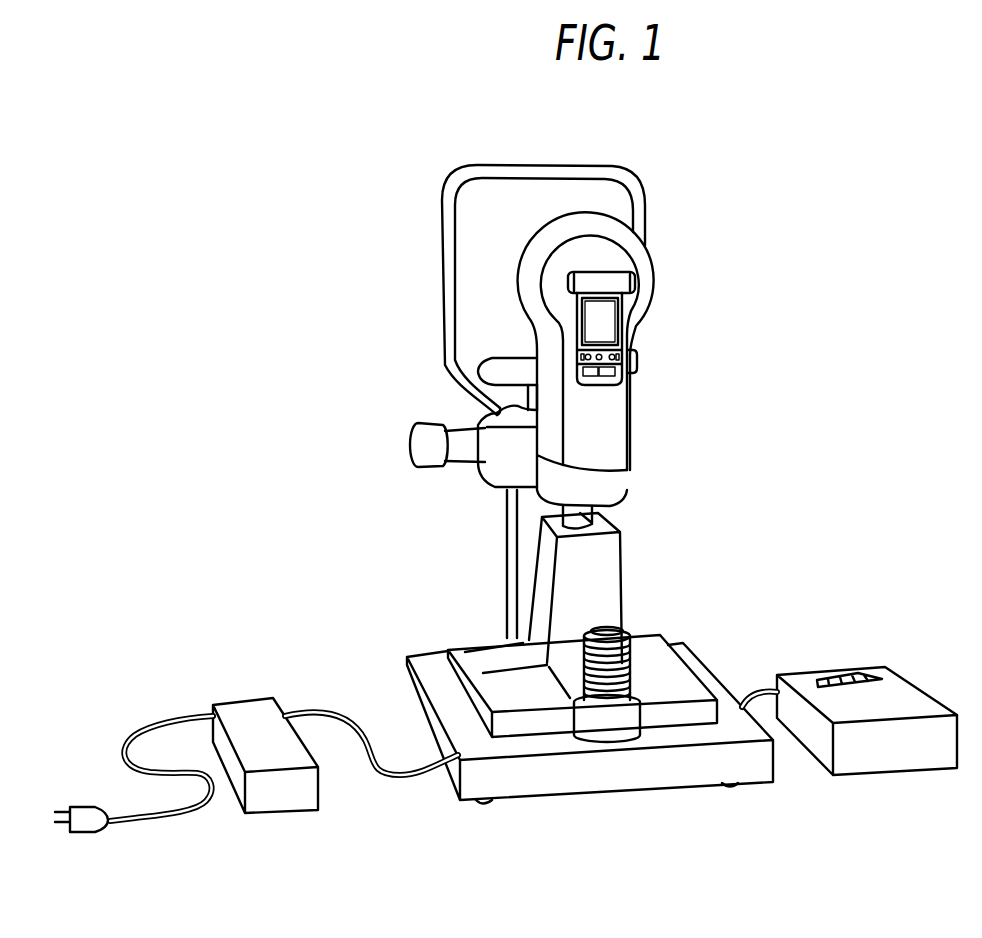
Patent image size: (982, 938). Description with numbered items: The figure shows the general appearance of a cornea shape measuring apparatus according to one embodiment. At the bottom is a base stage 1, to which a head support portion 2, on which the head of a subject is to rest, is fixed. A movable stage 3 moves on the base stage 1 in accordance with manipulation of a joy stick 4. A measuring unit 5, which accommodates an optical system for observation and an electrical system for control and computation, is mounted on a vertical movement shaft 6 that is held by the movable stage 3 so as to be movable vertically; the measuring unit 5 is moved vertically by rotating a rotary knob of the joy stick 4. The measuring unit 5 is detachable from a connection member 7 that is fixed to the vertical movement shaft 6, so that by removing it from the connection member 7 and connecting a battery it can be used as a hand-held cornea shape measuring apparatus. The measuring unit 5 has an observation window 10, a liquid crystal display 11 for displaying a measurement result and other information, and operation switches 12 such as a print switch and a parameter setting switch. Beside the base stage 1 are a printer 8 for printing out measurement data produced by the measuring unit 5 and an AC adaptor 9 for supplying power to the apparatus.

The base stage 1 is at (612, 779).
The head support portion 2 is at (456, 501).
The movable stage 3 is at (483, 660).
The joy stick 4 is at (636, 667).
The measuring unit 5 is at (664, 224).
The vertical movement shaft 6 is at (601, 516).
The connection member 7 is at (613, 484).
The printer 8 is at (873, 669).
The AC adaptor 9 is at (243, 698).
The observation window 10 is at (638, 284).
The liquid crystal display 11 is at (618, 330).
The operation switches 12 is at (643, 366).